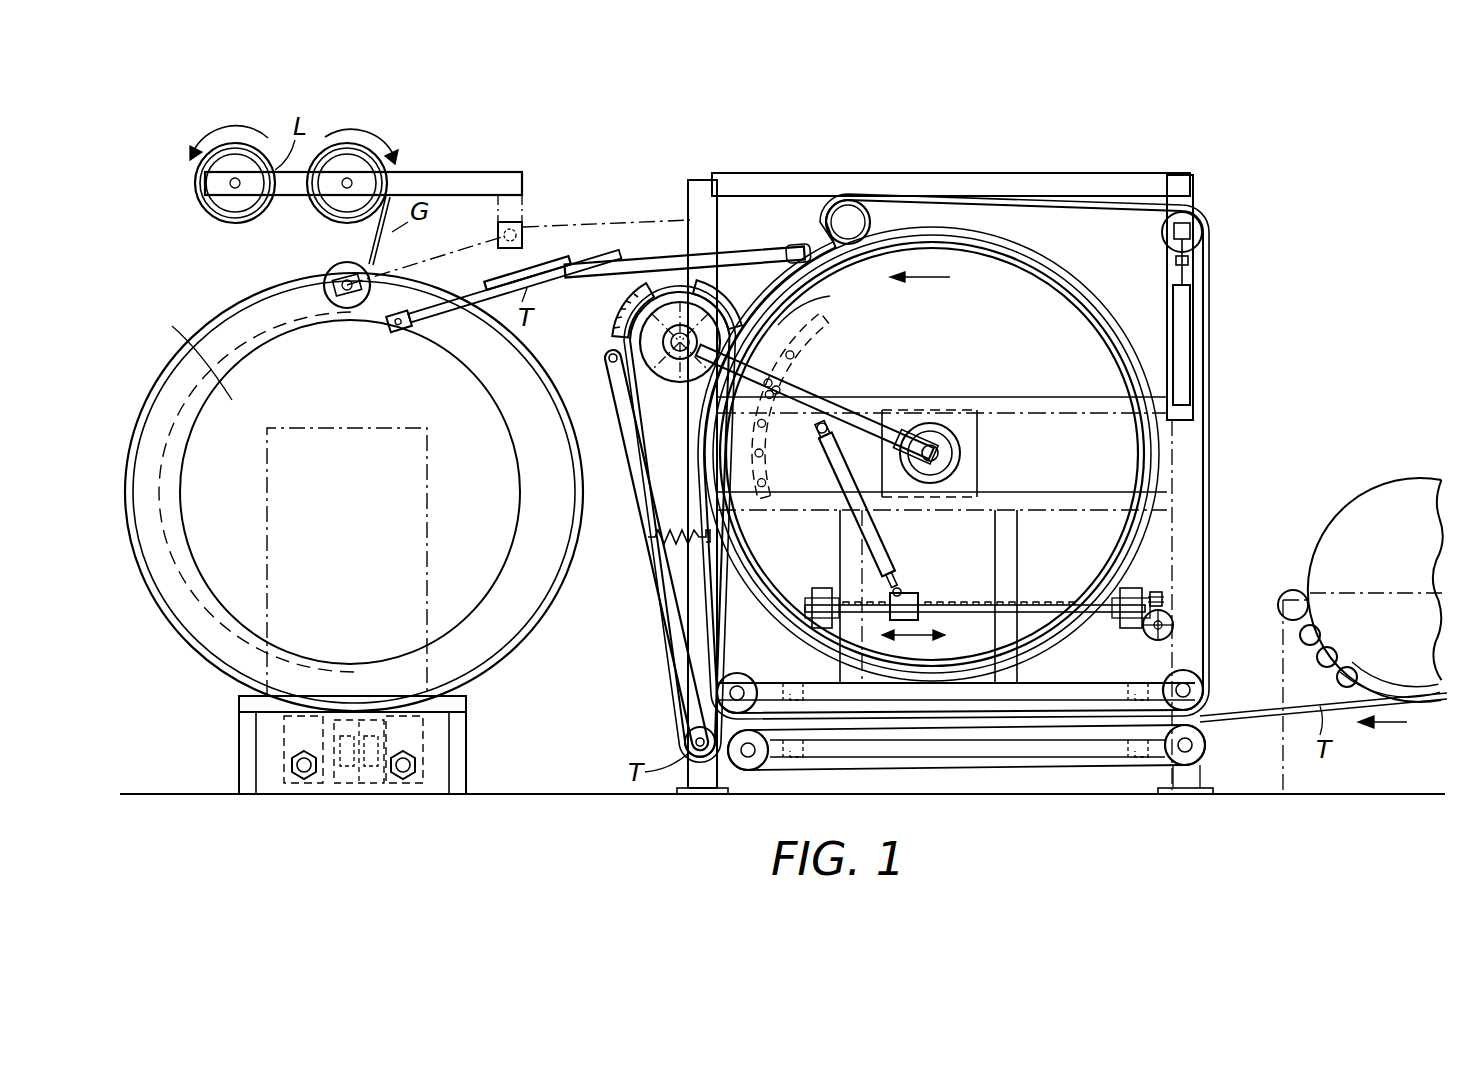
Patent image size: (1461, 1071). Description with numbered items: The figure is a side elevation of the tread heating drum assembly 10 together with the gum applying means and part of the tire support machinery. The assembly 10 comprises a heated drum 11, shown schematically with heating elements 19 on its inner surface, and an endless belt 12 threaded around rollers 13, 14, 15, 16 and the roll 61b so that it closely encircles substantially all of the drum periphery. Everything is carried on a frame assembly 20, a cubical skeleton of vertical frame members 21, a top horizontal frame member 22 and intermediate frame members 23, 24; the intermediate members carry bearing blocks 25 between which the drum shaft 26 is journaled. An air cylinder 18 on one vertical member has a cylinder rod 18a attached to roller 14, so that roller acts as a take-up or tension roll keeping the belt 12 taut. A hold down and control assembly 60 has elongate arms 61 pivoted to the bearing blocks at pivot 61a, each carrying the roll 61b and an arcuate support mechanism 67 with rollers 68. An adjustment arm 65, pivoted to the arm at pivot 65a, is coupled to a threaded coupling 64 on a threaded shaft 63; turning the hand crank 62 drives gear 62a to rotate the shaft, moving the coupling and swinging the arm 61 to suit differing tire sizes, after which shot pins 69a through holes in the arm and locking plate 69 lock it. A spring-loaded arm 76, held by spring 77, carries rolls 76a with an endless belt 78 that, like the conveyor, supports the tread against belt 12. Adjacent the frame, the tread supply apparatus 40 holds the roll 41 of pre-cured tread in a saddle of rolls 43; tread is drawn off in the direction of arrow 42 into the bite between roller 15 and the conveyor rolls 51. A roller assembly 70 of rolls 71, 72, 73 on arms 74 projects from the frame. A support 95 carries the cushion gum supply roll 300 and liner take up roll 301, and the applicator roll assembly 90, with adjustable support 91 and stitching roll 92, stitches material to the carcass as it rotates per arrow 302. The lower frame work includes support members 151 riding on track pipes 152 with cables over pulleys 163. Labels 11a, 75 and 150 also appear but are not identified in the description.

The tread heating drum assembly 10 is at (1128, 330).
The heated drum 11 is at (1053, 305).
The drum rotation direction 11a is at (926, 278).
The endless belt 12 is at (1040, 208).
The roller 13 is at (850, 200).
The roller 14 is at (1192, 230).
The roller 15 is at (1203, 690).
The roller 16 is at (742, 680).
The air cylinder 18 is at (1192, 318).
The cylinder rod 18a is at (1188, 258).
The heating elements 19 is at (895, 245).
The frame assembly 20 is at (1208, 212).
The vertical frame members 21 is at (698, 200).
The top horizontal frame member 22 is at (1035, 185).
The intermediate frame member 23 is at (1030, 493).
The intermediate frame member 24 is at (1085, 398).
The bearing blocks 25 is at (972, 468).
The shaft 26 is at (948, 432).
The tread supply apparatus 40 is at (1324, 505).
The roll of pre-cured tread material 41 is at (1392, 488).
The arrow 42 is at (1388, 722).
The rolls 43 is at (1298, 592).
The rolls 51 is at (752, 772).
The hold down and control assembly 60 is at (612, 331).
The elongate arm 61 is at (858, 418).
The pivot 61a is at (934, 444).
The roll 61b is at (819, 302).
The hand crank 62 is at (1175, 628).
The gear 62a is at (1162, 592).
The threaded shaft 63 is at (1030, 605).
The threaded coupling 64 is at (918, 600).
The adjustment arm 65 is at (858, 520).
The pivot 65a is at (816, 432).
The support mechanism 67 is at (720, 298).
The rollers 68 is at (625, 300).
The locking plate 69 is at (830, 325).
The shot pins 69a is at (782, 384).
The roller assembly 70 is at (530, 283).
The roll 71 is at (398, 334).
The roll 72 is at (565, 270).
The roll 73 is at (790, 245).
The arms 74 is at (445, 328).
The lever 75 is at (622, 265).
The arm 76 is at (660, 606).
The rolls 76a is at (608, 358).
The spring 77 is at (708, 545).
The endless belt 78 is at (628, 490).
The applicator roll assembly 90 is at (425, 262).
The adjustable support 91 is at (515, 232).
The stitching roll 92 is at (330, 268).
The support 95 is at (462, 172).
The pedestal 150 is at (352, 745).
The support members 151 is at (284, 740).
The pipes 152 is at (300, 780).
The pulleys 163 is at (357, 785).
The cushion gum supply roll 300 is at (340, 160).
The liner take up roll 301 is at (235, 158).
The arrow 302 is at (162, 470).